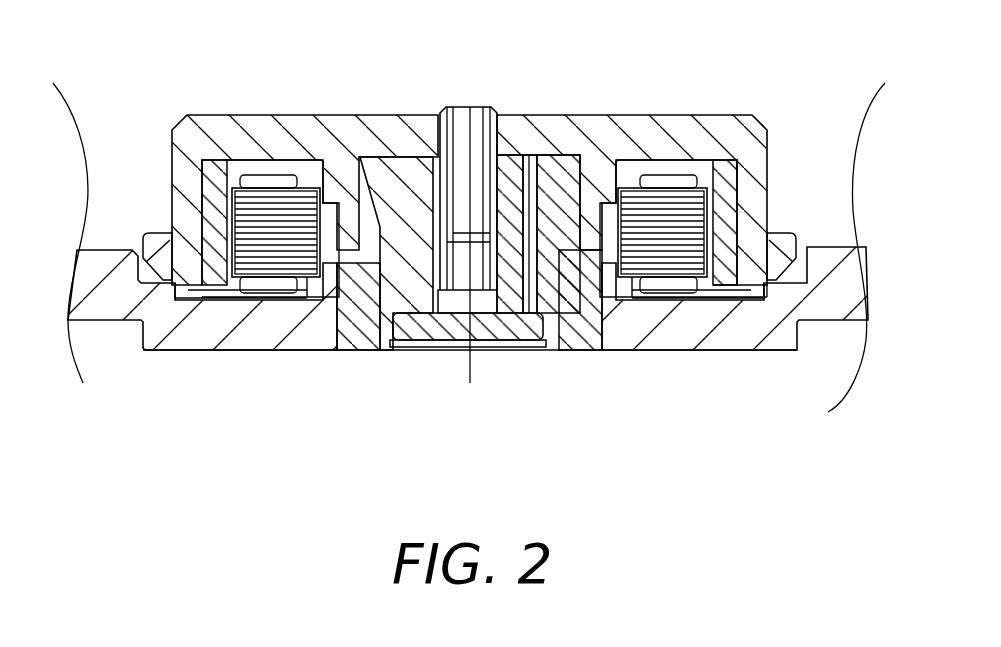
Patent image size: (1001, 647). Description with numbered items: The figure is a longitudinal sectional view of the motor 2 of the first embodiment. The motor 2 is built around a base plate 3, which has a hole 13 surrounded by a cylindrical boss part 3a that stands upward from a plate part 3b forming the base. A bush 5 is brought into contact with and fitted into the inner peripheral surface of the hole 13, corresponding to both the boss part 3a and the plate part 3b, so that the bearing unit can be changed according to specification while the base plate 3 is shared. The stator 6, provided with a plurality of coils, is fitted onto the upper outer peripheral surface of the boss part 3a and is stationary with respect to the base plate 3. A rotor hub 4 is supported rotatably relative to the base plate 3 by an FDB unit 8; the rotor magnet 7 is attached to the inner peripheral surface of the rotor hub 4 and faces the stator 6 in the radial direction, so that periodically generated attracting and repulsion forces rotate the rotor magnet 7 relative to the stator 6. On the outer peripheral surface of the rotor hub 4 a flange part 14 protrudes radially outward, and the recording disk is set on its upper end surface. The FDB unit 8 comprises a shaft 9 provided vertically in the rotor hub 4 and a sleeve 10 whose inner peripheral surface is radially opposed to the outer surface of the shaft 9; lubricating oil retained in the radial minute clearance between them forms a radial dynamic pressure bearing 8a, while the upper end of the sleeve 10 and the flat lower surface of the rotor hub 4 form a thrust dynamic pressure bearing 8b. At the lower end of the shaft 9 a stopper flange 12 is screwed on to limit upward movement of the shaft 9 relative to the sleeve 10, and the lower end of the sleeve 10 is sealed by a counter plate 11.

The motor 2 is at (170, 113).
The base plate 3 is at (113, 293).
The boss part 3a is at (617, 240).
The plate part 3b is at (677, 323).
The rotor hub 4 is at (782, 175).
The bush 5 is at (351, 295).
The stator 6 is at (260, 233).
The rotor magnet 7 is at (218, 233).
The FDB unit 8 is at (529, 355).
The radial dynamic pressure bearing 8a is at (505, 200).
The thrust dynamic pressure bearing 8b is at (548, 180).
The shaft 9 is at (448, 135).
The sleeve 10 is at (410, 230).
The counter plate 11 is at (450, 343).
The stopper flange 12 is at (410, 323).
The hole 13 is at (590, 290).
The flange part 14 is at (858, 380).